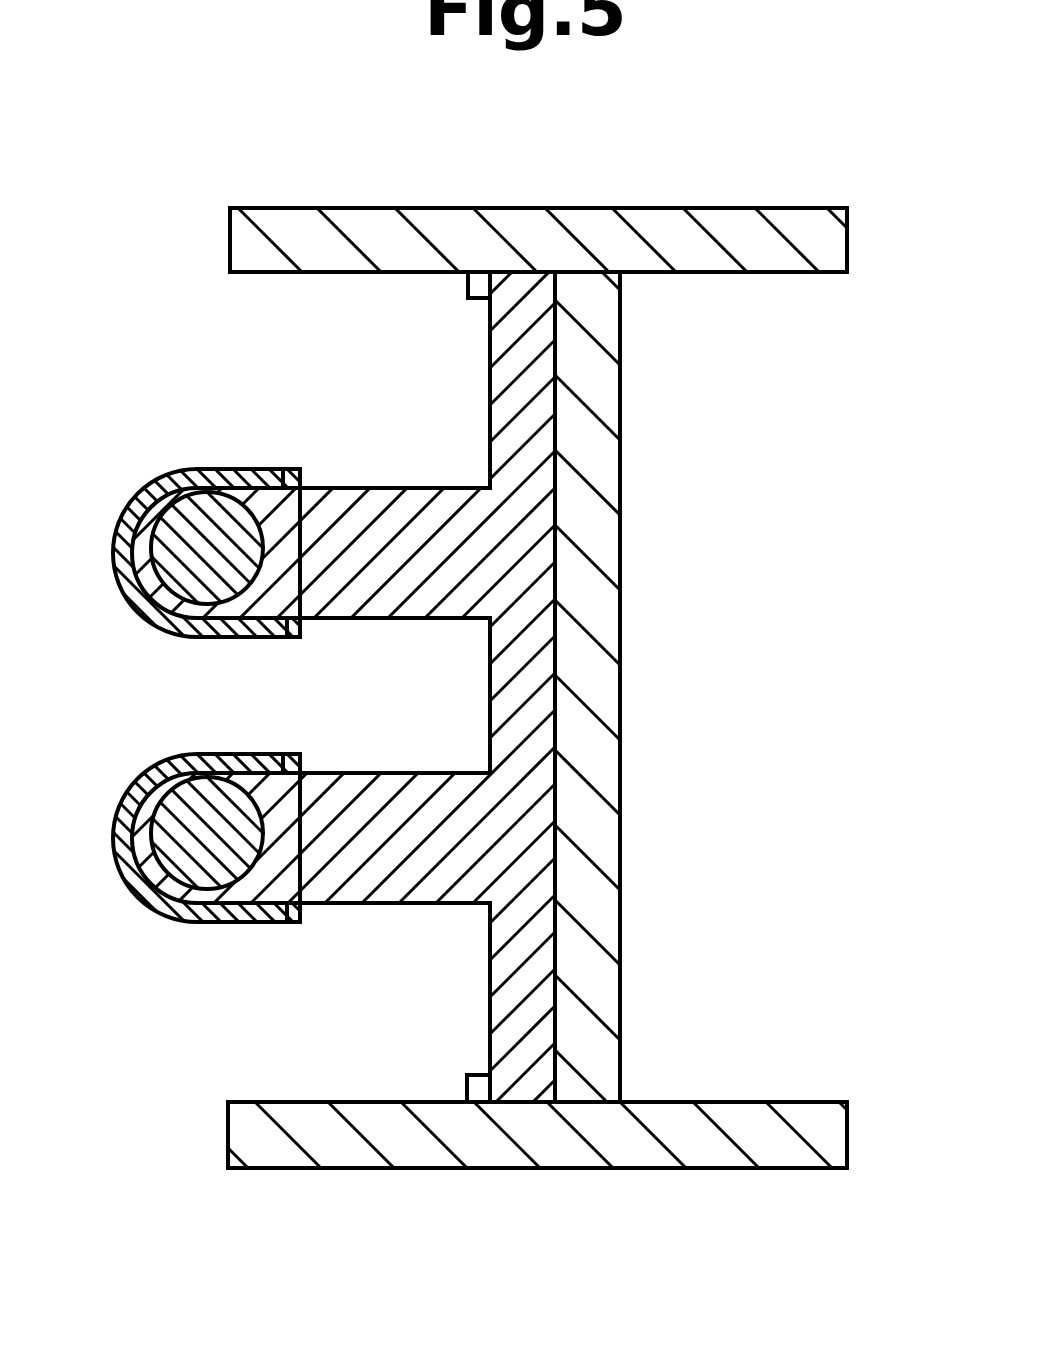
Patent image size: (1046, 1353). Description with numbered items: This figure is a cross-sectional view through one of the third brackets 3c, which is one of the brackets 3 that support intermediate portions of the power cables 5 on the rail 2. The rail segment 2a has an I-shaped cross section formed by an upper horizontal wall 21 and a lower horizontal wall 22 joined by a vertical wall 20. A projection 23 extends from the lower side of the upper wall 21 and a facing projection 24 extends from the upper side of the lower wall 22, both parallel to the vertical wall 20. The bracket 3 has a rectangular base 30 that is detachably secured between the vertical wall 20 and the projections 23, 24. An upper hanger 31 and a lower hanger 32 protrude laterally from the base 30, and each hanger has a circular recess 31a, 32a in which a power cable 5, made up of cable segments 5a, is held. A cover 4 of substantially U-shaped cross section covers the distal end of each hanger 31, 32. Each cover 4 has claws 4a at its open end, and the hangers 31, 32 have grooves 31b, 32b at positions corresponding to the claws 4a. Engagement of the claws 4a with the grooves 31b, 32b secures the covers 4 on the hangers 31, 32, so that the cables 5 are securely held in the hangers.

The rail 2 is at (568, 663).
The rail segment 2a is at (578, 208).
The upper horizontal wall 21 is at (803, 208).
The lower horizontal wall 22 is at (706, 1150).
The projection 23 is at (466, 284).
The projection 24 is at (466, 1078).
The vertical wall 20 is at (603, 463).
The bracket 3 is at (523, 675).
The third bracket 3c is at (523, 675).
The base 30 is at (528, 912).
The upper hanger 31 is at (443, 517).
The circular recess 31a is at (176, 592).
The groove 31b is at (290, 480).
The lower hanger 32 is at (418, 882).
The circular recess 32a is at (210, 900).
The groove 32b is at (296, 762).
The cover 4 is at (227, 695).
The claw 4a is at (302, 549).
The power cable 5 is at (200, 713).
The cable segment 5a is at (128, 864).